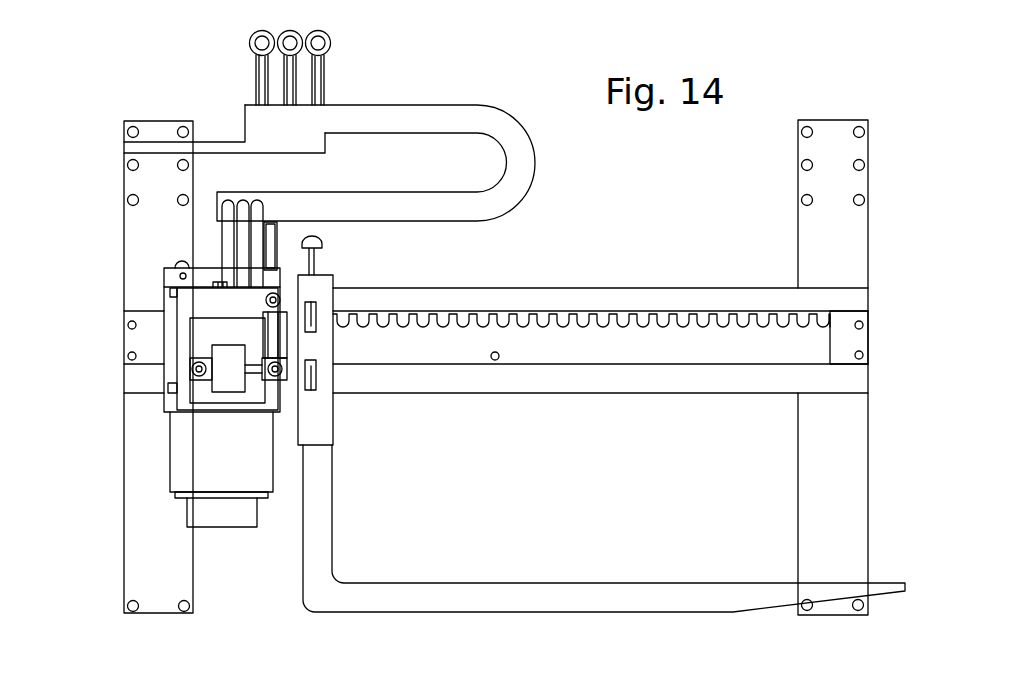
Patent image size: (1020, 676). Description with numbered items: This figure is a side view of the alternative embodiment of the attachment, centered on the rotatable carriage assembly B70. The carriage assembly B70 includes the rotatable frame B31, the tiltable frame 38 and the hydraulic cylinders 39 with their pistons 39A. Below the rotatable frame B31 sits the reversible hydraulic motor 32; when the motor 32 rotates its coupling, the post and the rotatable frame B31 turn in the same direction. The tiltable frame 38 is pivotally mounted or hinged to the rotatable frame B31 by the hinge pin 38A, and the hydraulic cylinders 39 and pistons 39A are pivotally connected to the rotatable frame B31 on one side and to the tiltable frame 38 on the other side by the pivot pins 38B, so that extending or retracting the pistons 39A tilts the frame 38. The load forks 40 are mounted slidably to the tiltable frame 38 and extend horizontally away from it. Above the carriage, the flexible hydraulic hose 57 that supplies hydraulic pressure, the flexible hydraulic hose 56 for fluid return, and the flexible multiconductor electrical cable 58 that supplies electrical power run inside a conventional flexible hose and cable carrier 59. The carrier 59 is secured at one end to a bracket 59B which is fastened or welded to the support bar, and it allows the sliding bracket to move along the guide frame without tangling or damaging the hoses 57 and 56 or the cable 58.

The bracket 59B is at (206, 147).
The flexible hydraulic hose 57 is at (228, 213).
The flexible hydraulic hose 56 is at (242, 238).
The flexible multiconductor electrical cord or cable 58 is at (257, 275).
The rotatable frame B31 is at (177, 310).
The rotatable carriage assembly B70 is at (106, 374).
The hinge pin 38A is at (277, 292).
The tiltable frame 38 is at (310, 342).
The flexible hose and cable carrier 59 is at (397, 212).
The pivot pins 38B is at (202, 370).
The hydraulic cylinders 39 is at (227, 382).
The pistons 39A is at (252, 372).
The reversible hydraulic motor 32 is at (203, 515).
The load forks 40 is at (465, 595).